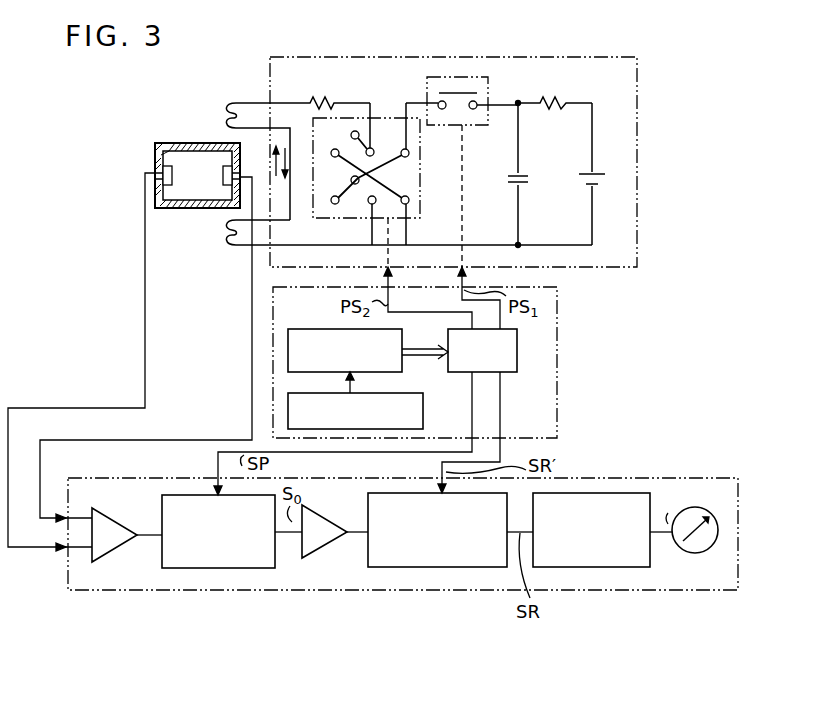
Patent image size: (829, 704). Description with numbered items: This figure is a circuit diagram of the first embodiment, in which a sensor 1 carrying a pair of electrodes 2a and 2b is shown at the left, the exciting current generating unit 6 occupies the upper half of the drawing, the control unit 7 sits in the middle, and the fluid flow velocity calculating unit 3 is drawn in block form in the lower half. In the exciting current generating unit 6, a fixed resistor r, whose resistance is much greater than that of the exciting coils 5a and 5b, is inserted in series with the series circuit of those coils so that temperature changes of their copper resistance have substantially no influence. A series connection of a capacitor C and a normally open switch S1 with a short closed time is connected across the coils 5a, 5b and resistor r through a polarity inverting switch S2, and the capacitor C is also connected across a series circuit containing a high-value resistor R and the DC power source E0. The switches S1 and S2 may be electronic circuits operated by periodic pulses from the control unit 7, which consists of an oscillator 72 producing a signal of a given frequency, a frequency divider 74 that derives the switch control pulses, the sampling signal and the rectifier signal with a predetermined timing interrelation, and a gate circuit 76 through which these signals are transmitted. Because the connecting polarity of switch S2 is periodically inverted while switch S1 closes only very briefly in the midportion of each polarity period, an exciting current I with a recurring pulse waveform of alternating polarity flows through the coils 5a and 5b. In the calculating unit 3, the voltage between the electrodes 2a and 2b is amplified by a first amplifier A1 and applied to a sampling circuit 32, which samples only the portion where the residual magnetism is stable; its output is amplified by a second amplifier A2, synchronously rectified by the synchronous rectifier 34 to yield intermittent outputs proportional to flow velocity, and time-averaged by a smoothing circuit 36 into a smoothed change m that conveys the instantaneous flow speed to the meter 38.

The sensor cell 1 is at (201, 143).
The electrode 2a is at (222, 180).
The electrode 2b is at (168, 167).
The fluid flow velocity calculating unit 3 is at (590, 478).
The exciting coil 5a is at (236, 103).
The exciting coil 5b is at (236, 246).
The exciting current generating unit 6 is at (637, 166).
The control unit 7 is at (557, 370).
The sampling circuit 32 is at (275, 555).
The synchronous rectifier 34 is at (490, 567).
The smoothing circuit 36 is at (607, 567).
The meter 38 is at (695, 495).
The oscillator 72 is at (423, 400).
The frequency divider 74 is at (306, 326).
The gate circuit 76 is at (517, 362).
The fixed resistor r is at (336, 92).
The resistor R is at (555, 92).
The capacitor C is at (527, 174).
The power source E0 is at (499, 174).
The normally open switch S1 is at (488, 92).
The polarity inverting switch S2 is at (392, 118).
The exciting current I is at (280, 174).
The first amplifier A1 is at (114, 535).
The second amplifier A2 is at (324, 531).
The smoothed change m is at (666, 508).